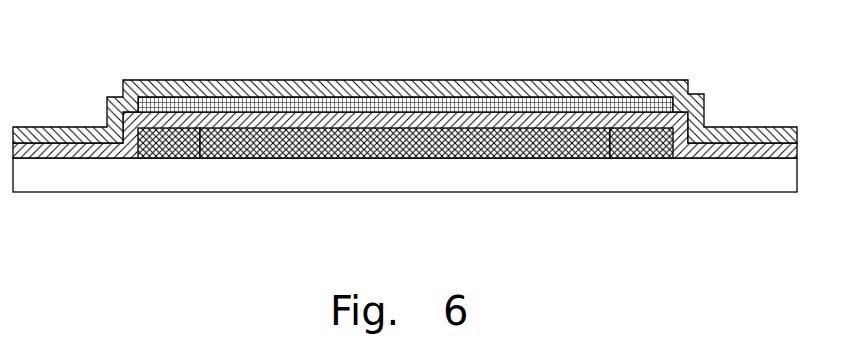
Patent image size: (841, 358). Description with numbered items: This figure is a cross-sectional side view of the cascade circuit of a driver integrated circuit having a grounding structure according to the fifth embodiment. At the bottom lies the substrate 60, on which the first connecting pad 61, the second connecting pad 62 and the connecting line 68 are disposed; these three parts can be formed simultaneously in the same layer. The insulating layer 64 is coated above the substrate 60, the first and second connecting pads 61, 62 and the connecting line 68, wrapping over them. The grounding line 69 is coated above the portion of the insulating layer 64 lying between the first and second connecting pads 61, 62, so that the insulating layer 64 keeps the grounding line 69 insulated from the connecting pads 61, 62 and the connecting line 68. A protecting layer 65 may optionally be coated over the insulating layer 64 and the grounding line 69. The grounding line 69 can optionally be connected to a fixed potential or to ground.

The substrate 60 is at (745, 177).
The first connecting pad 61 is at (175, 150).
The second connecting pad 62 is at (642, 150).
The insulating layer 64 is at (748, 150).
The protecting layer 65 is at (653, 85).
The connecting line 68 is at (472, 150).
The grounding line 69 is at (455, 98).